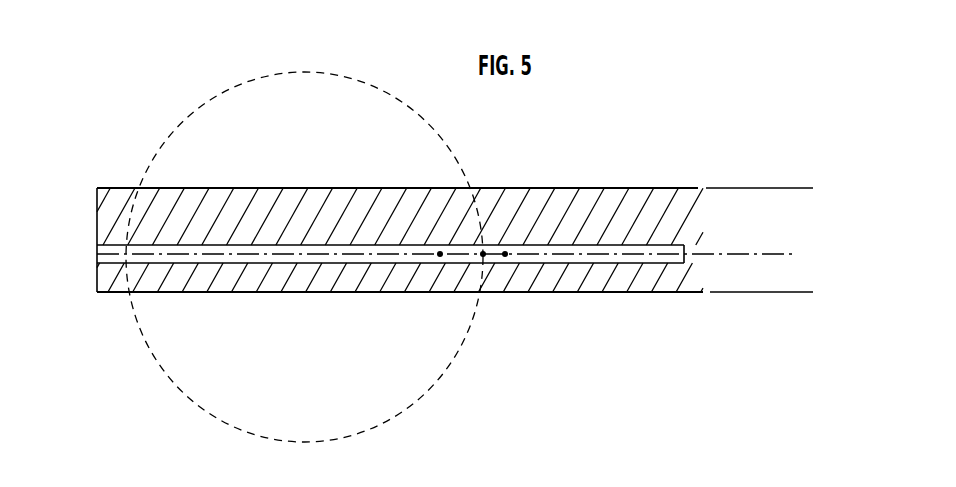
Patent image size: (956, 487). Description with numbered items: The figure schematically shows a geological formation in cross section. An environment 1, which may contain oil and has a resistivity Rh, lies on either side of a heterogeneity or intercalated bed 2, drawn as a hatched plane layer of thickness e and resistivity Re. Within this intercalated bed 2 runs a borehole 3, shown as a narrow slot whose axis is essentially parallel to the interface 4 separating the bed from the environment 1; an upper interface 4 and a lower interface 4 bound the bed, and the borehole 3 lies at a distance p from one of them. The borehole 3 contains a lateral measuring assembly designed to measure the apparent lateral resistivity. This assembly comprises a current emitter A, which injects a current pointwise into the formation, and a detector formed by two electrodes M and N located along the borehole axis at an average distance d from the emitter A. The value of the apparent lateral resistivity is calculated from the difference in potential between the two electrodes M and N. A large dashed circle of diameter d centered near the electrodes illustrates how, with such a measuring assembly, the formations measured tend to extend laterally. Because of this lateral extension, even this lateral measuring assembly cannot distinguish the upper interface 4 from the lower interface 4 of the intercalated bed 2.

The environment 1 is at (581, 138).
The heterogeneity or intercalated bed 2 is at (682, 201).
The borehole 3 is at (602, 244).
The interface 4 is at (651, 188).
The distance d is at (305, 254).
The current emitter A is at (305, 244).
The detector electrode M is at (440, 256).
The detector electrode N is at (505, 256).
The resistivity of the intercalated bed Re is at (594, 221).
The resistivity of the environment Rh is at (591, 318).
The distance p is at (775, 188).
The thickness e is at (812, 188).